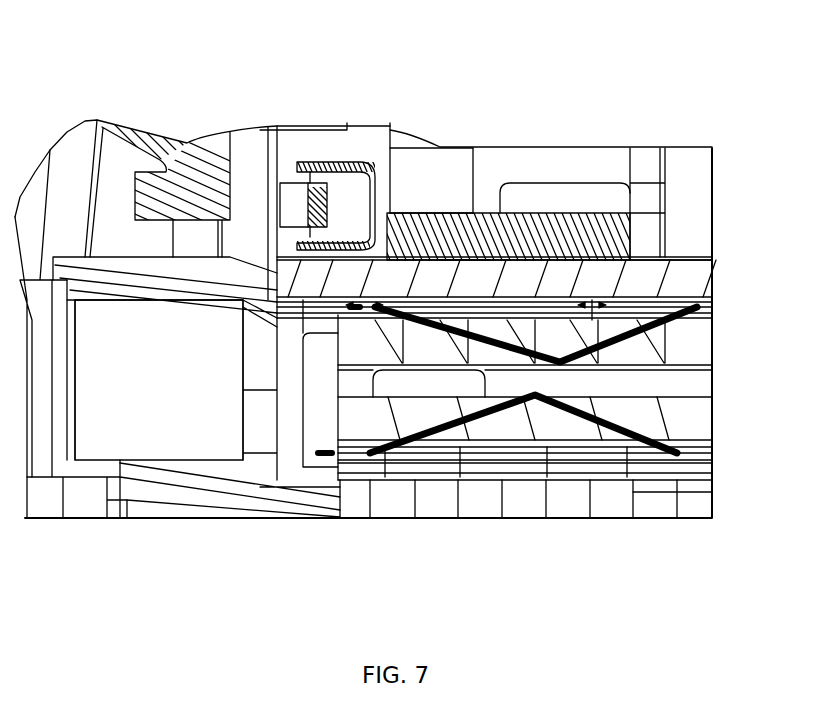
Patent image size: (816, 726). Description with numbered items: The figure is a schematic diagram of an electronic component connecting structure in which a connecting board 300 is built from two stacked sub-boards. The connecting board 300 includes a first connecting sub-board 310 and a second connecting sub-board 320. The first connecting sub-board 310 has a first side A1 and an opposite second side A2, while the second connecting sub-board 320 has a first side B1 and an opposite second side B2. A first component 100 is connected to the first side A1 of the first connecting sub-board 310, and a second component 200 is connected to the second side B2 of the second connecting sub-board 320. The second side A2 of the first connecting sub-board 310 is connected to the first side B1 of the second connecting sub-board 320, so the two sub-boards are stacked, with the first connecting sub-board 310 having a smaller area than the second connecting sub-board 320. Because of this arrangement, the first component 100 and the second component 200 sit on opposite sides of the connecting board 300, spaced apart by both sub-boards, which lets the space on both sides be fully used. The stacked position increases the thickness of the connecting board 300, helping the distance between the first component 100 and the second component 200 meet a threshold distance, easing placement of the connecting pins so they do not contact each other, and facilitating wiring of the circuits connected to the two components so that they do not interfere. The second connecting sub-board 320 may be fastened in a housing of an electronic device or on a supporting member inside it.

The first component 100 is at (317, 162).
The second component 200 is at (322, 413).
The connecting board 300 is at (508, 161).
The first connecting sub-board 310 is at (510, 243).
The second connecting sub-board 320 is at (560, 280).
The first side of the first connecting sub-board A1 is at (427, 213).
The second side of the first connecting sub-board A2 is at (465, 257).
The first side of the second connecting sub-board B1 is at (615, 263).
The second side of the second connecting sub-board B2 is at (592, 300).